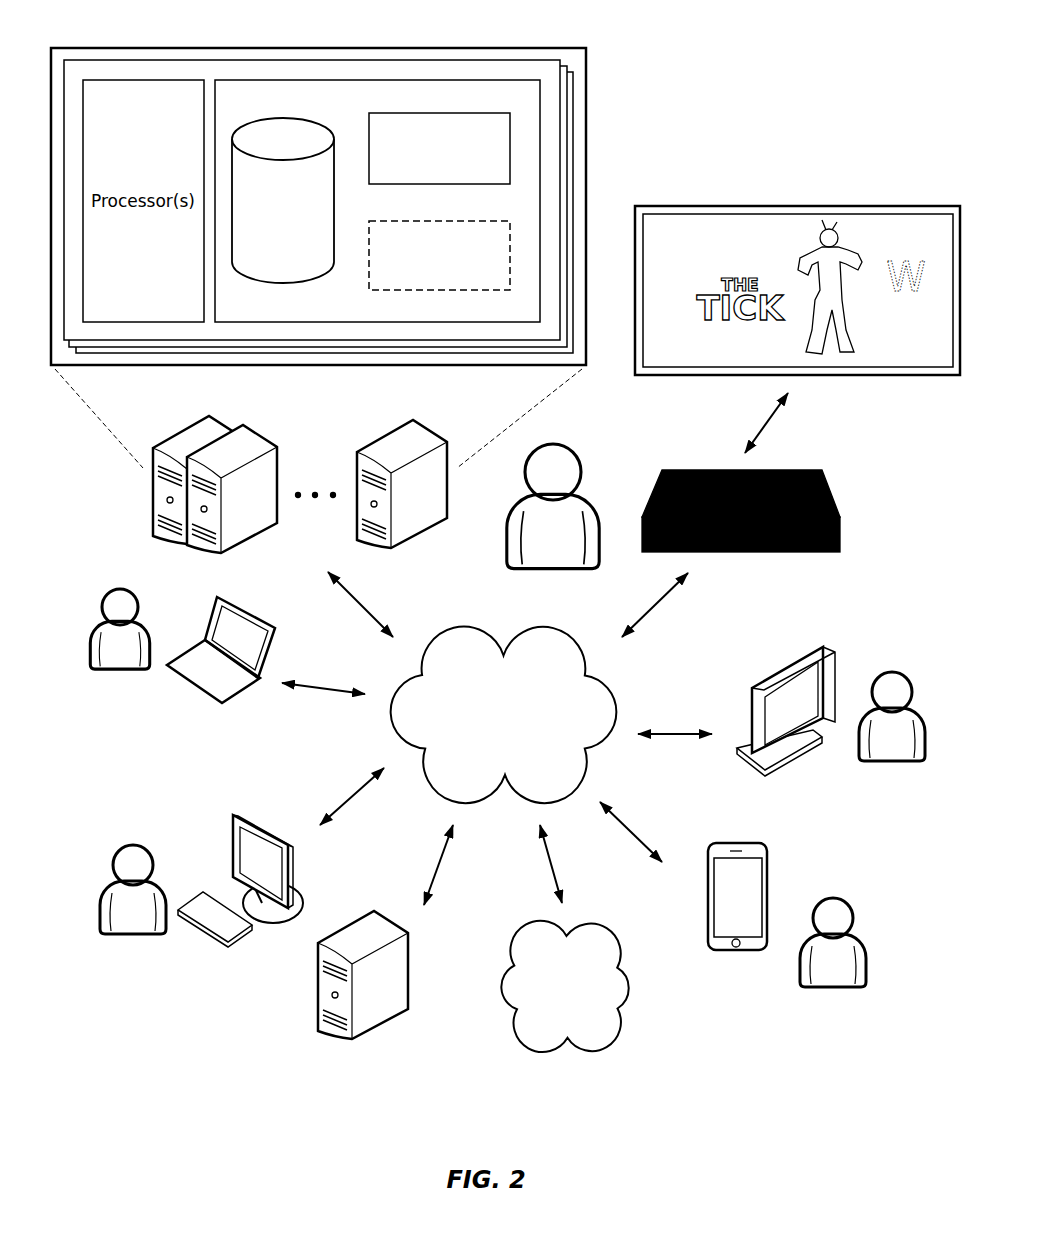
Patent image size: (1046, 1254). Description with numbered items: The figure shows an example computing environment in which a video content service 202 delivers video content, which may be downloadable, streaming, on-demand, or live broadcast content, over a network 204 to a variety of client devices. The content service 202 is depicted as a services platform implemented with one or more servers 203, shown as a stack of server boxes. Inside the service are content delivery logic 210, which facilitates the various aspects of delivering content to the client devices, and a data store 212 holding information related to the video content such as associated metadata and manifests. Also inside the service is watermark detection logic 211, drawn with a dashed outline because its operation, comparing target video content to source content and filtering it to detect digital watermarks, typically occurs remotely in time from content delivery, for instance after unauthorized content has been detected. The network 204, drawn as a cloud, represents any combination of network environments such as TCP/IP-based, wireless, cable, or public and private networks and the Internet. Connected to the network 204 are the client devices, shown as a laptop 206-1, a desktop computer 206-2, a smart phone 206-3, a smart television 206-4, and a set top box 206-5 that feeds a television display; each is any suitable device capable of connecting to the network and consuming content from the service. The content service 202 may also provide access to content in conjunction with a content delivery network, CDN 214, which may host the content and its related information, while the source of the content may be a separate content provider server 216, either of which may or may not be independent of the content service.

The video content service 202 is at (500, 47).
The servers 203 is at (122, 60).
The content delivery logic 210 is at (375, 116).
The watermark detection logic 211 is at (375, 277).
The data store 212 is at (293, 136).
The network 204 is at (566, 722).
The content delivery network (CDN) 214 is at (550, 1010).
The content provider server 216 is at (345, 1042).
The client device 206-1 is at (272, 652).
The client device 206-2 is at (233, 814).
The client device 206-3 is at (737, 843).
The client device 206-4 is at (755, 680).
The client device 206-5 is at (805, 468).